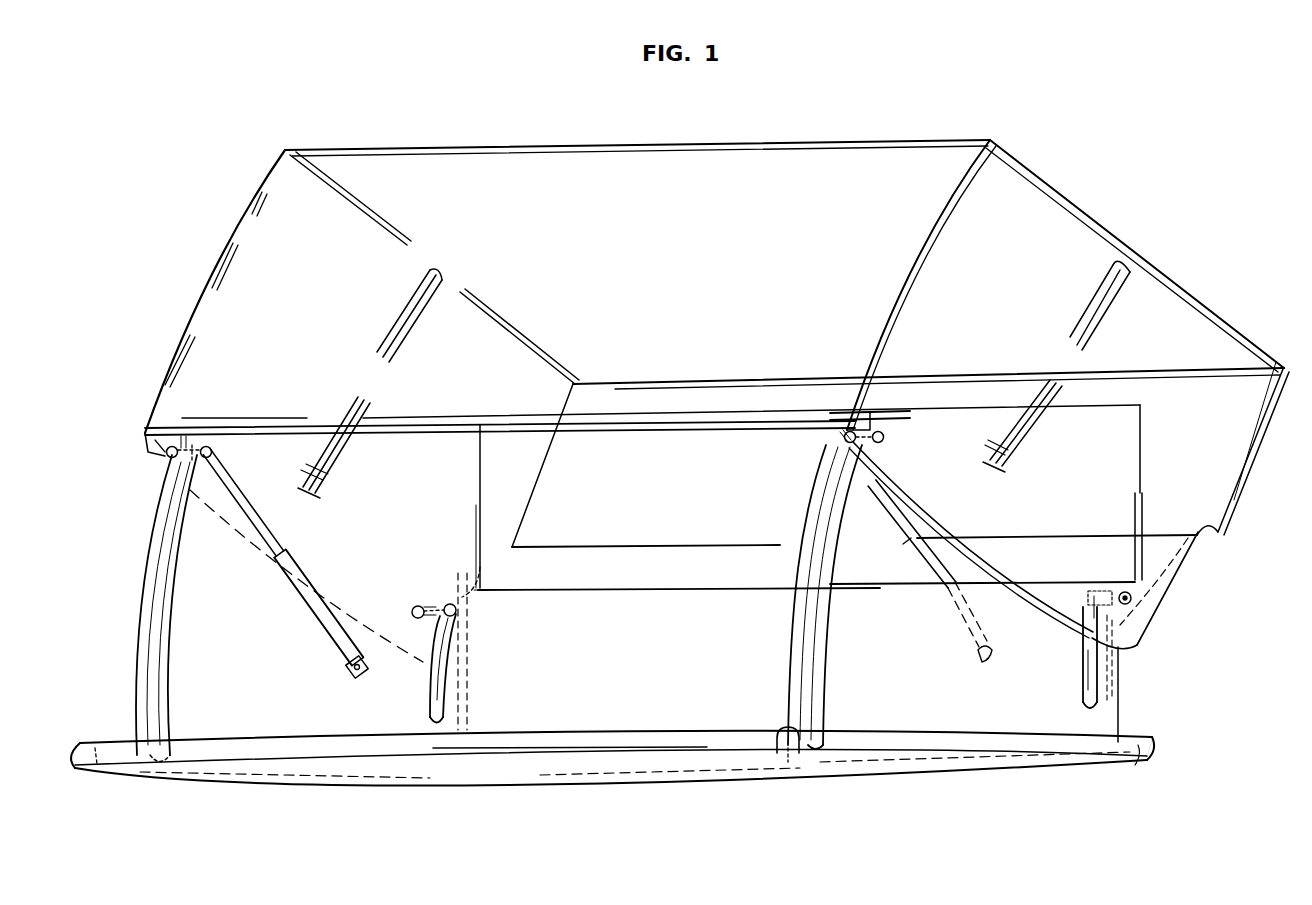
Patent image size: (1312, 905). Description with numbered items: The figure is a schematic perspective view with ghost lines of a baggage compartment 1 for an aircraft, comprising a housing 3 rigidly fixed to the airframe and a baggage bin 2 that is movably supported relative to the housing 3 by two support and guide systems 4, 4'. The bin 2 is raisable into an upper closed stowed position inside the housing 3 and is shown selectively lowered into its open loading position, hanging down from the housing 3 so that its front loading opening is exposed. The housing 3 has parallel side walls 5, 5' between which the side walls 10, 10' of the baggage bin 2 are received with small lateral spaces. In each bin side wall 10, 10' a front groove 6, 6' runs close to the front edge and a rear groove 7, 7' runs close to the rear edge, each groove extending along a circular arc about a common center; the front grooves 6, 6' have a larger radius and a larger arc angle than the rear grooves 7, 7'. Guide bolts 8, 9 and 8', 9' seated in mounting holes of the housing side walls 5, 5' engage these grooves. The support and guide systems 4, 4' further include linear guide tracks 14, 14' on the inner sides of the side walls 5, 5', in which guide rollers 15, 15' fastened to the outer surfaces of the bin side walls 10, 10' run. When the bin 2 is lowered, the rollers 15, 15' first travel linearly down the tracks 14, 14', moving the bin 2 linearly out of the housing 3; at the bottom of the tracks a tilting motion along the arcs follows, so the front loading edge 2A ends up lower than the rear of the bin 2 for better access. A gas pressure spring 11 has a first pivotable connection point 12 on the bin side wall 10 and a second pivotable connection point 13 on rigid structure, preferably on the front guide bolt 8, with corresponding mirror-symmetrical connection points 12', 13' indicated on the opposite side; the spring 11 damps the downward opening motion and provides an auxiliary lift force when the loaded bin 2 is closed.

The baggage compartment 1 is at (236, 147).
The baggage bin 2 is at (1098, 723).
The front loading edge 2A is at (787, 752).
The housing 3 is at (1165, 300).
The support and guide system 4 is at (612, 713).
The support and guide system 4' is at (1202, 764).
The side wall 5 is at (210, 303).
The side wall 5' is at (1009, 285).
The front groove 6 is at (181, 608).
The front groove 6' is at (839, 597).
The rear groove 7 is at (401, 648).
The rear groove 7' is at (1056, 674).
The guide bolt 8 is at (122, 458).
The guide bolt 8' is at (957, 259).
The guide bolt 9 is at (417, 583).
The guide bolt 9' is at (1161, 617).
The side wall 10 is at (642, 538).
The side wall 10' is at (808, 557).
The gas pressure spring 11 is at (285, 558).
The first pivotable connection point 12 is at (313, 678).
The strut end fitting 12' is at (971, 552).
The second pivotable connection point 13 is at (125, 491).
The pivot hinge 13' is at (894, 376).
The linear guide track 14 is at (358, 315).
The linear guide track 14' is at (1141, 272).
The guide roller 15 is at (362, 447).
The guide roller 15' is at (983, 426).